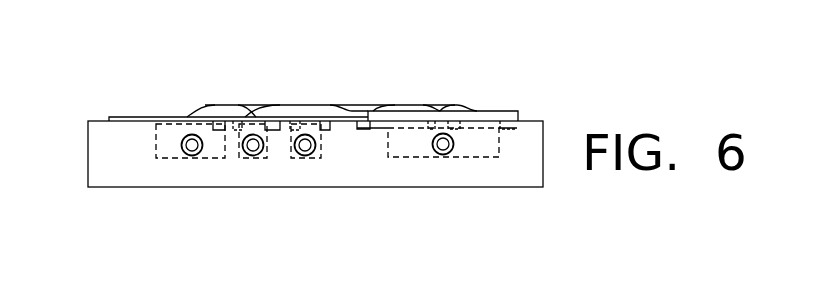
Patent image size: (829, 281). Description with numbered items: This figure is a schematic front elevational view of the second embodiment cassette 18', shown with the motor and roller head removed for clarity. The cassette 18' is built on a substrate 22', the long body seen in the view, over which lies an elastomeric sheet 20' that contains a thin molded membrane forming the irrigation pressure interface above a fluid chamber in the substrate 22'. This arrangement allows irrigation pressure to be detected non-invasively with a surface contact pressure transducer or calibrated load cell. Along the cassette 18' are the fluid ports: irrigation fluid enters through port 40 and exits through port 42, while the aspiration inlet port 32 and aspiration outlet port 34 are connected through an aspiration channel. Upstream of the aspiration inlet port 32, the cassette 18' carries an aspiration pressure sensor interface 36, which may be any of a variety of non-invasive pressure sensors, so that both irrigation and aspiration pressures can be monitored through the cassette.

The cassette 18' is at (332, 75).
The elastomeric sheet 20' is at (239, 94).
The substrate 22' is at (297, 134).
The aspiration pressure sensor interface 36 is at (488, 111).
The port 40 is at (181, 146).
The aspiration outlet port 34 is at (253, 157).
The port 42 is at (306, 157).
The aspiration inlet port 32 is at (443, 156).